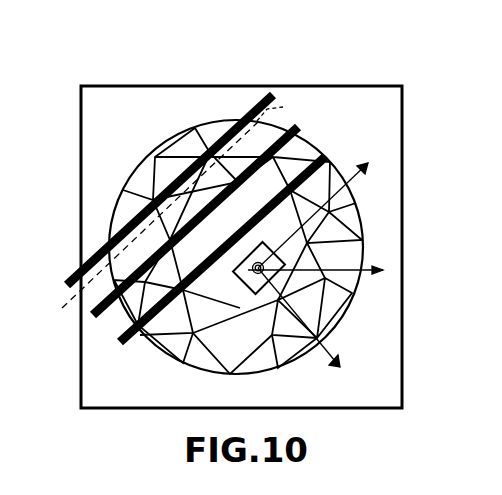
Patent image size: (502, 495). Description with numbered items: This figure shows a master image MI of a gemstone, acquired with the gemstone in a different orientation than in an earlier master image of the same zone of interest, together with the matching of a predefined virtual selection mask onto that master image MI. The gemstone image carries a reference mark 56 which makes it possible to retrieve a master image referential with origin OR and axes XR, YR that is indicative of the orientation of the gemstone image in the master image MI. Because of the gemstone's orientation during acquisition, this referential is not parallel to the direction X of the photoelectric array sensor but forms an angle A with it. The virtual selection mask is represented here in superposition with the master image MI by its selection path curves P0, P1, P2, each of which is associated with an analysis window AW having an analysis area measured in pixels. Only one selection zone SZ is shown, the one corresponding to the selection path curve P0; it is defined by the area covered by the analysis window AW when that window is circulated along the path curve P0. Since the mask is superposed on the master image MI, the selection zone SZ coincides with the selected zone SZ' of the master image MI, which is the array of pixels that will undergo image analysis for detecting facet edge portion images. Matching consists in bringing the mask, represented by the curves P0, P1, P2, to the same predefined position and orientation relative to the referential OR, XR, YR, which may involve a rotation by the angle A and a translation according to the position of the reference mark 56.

The master image MI is at (141, 86).
The selection path curve P0 is at (247, 112).
The selection path curve P1 is at (320, 114).
The selection path curve P2 is at (331, 159).
The analysis window AW is at (283, 107).
The selection zone SZ is at (135, 229).
The selected zone SZ' is at (135, 229).
The origin of master image referential OR is at (238, 275).
The reference mark 56 is at (266, 262).
The direction X of photoelectric array sensor X is at (324, 271).
The YR axis of master image referential YR is at (326, 203).
The XR axis of master image referential XR is at (308, 331).
The angle A is at (353, 307).